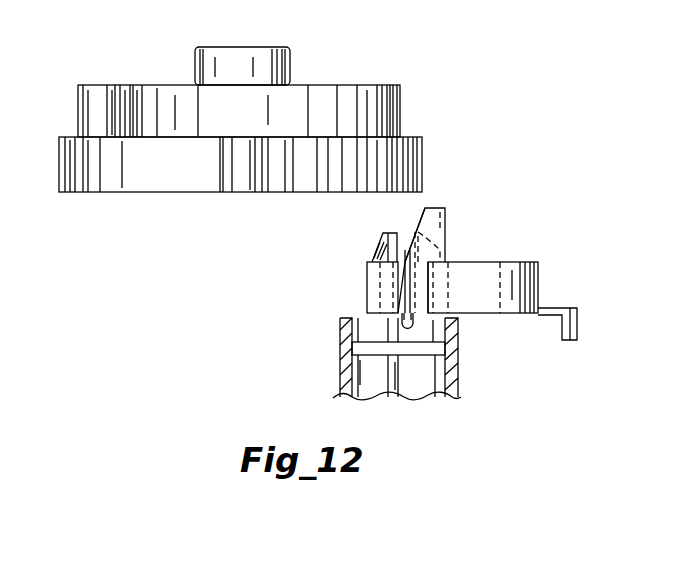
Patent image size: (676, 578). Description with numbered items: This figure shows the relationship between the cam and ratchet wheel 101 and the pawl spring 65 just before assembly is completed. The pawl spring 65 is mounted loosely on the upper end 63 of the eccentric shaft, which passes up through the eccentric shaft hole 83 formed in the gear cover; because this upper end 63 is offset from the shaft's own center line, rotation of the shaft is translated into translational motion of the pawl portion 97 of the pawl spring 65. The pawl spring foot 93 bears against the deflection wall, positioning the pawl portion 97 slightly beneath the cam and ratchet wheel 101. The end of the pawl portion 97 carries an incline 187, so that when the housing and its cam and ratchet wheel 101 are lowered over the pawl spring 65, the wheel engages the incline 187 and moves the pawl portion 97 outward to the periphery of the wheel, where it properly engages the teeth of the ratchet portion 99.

The cam and ratchet wheel 101 is at (373, 81).
The ratchet portion 99 is at (423, 164).
The pawl portion 97 is at (447, 233).
The incline 187 is at (414, 222).
The pawl spring 65 is at (368, 273).
The upper end of the eccentric shaft 63 is at (388, 325).
The pawl spring foot 93 is at (577, 322).
The eccentric shaft hole 83 is at (442, 380).